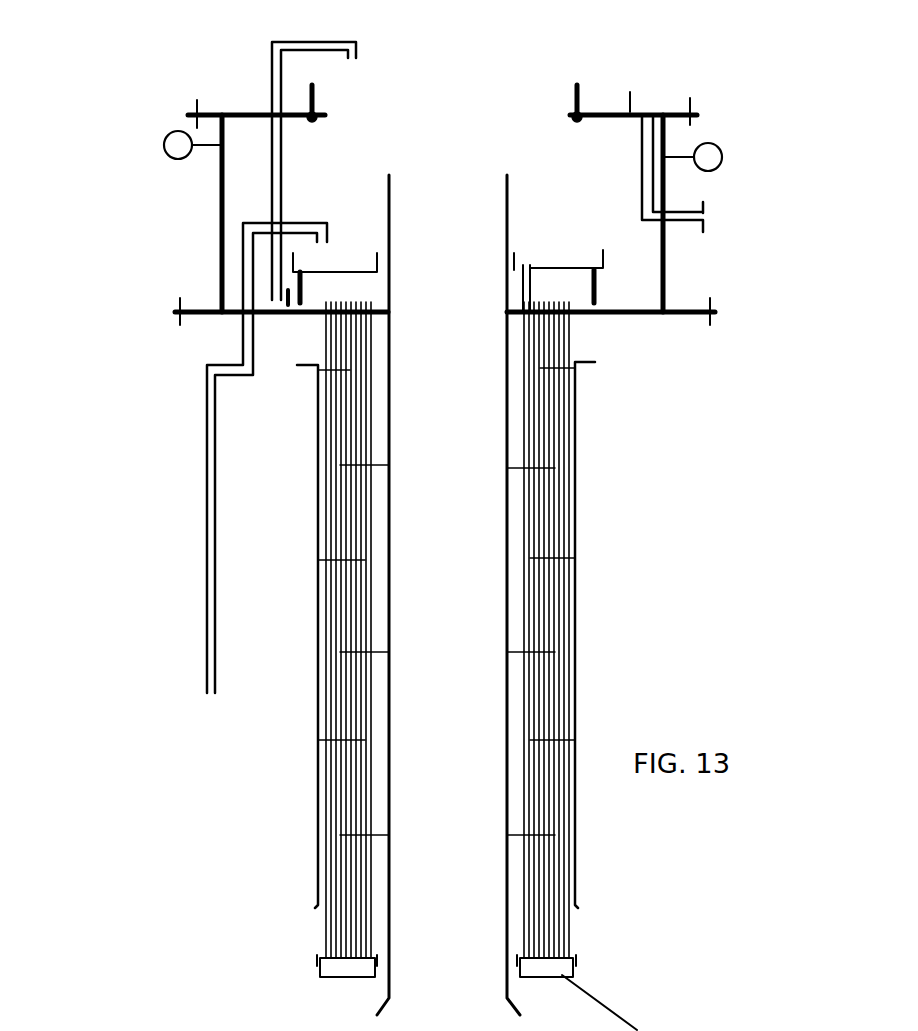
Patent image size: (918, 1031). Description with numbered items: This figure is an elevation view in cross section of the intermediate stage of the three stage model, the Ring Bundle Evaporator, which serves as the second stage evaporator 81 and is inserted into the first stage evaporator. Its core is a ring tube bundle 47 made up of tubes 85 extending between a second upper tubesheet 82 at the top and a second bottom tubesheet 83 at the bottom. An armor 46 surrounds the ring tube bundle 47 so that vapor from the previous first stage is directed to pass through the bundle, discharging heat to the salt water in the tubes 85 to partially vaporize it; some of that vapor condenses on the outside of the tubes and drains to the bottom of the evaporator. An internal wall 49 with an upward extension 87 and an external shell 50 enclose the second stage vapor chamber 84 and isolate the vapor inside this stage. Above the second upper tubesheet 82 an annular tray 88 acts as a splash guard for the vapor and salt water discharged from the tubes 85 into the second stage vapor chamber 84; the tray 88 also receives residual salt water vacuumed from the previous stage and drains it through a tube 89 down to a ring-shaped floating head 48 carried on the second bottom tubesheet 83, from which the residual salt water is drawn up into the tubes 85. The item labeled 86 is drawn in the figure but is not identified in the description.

The armor 46 is at (577, 478).
The ring tube bundle 47 is at (335, 512).
The floating head 48 is at (635, 1003).
The internal wall 49 is at (388, 367).
The external shell 50 is at (222, 187).
The second stage evaporator 81 is at (755, 363).
The second upper tubesheet 82 is at (588, 312).
The second bottom tubesheet 83 is at (573, 960).
The second stage vapor chamber 84 is at (635, 250).
The tubes 85 is at (558, 628).
The header 86 is at (602, 113).
The upward extension 87 is at (392, 193).
The annular tray 88 is at (555, 268).
The tube 89 is at (522, 270).